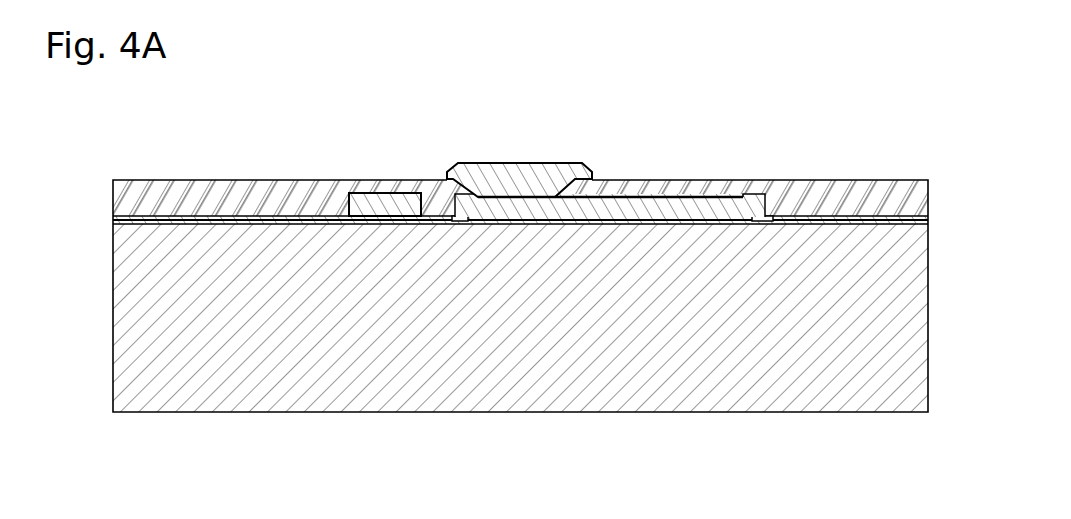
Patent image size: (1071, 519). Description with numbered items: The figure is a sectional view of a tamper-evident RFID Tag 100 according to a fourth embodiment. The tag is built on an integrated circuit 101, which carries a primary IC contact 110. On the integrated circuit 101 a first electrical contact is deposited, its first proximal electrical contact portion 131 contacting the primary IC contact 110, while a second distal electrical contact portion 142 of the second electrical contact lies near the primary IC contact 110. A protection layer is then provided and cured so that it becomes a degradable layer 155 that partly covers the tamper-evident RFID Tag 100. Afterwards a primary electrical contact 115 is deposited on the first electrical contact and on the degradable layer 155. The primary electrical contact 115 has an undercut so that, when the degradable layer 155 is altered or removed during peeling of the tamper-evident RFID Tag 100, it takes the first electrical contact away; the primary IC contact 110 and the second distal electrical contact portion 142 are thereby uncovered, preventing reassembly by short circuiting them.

The tamper-evident RFID Tag 100 is at (737, 64).
The integrated circuit 101 is at (740, 312).
The primary IC contact 110 is at (536, 223).
The primary electrical contact 115 is at (513, 182).
The first proximal electrical contact portion 131 is at (638, 203).
The second distal electrical contact portion 142 is at (383, 203).
The degradable layer 155 is at (873, 190).